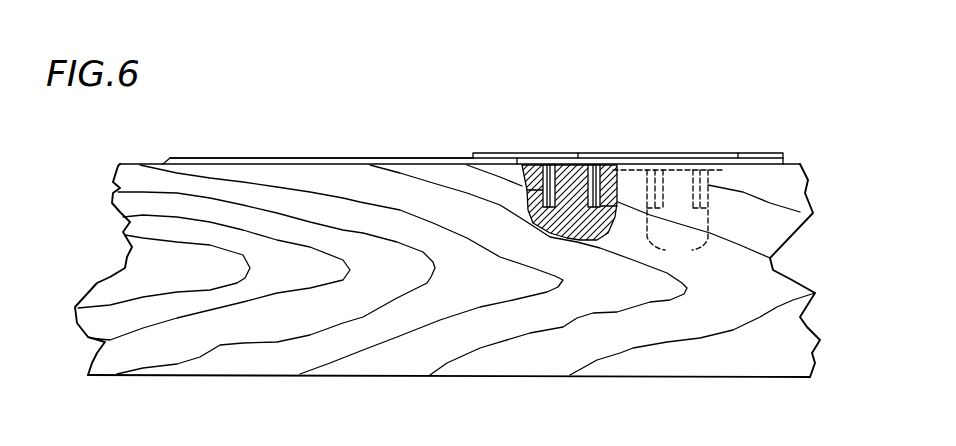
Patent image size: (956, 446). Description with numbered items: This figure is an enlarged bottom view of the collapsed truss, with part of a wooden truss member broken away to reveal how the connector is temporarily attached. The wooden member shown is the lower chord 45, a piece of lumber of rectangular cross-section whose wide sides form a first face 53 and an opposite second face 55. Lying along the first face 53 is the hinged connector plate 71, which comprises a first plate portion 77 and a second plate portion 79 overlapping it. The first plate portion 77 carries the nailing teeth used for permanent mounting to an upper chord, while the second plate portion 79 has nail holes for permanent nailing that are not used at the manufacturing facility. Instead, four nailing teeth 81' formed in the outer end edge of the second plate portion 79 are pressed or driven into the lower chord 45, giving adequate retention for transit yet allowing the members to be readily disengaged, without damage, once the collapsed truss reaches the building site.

The lower chord 45 is at (505, 365).
The first face 53 is at (148, 168).
The second face 55 is at (217, 376).
The connector plate 71 is at (430, 146).
The first plate portion 77 is at (295, 162).
The second plate portion 79 is at (727, 158).
The nailing teeth 81' is at (623, 185).